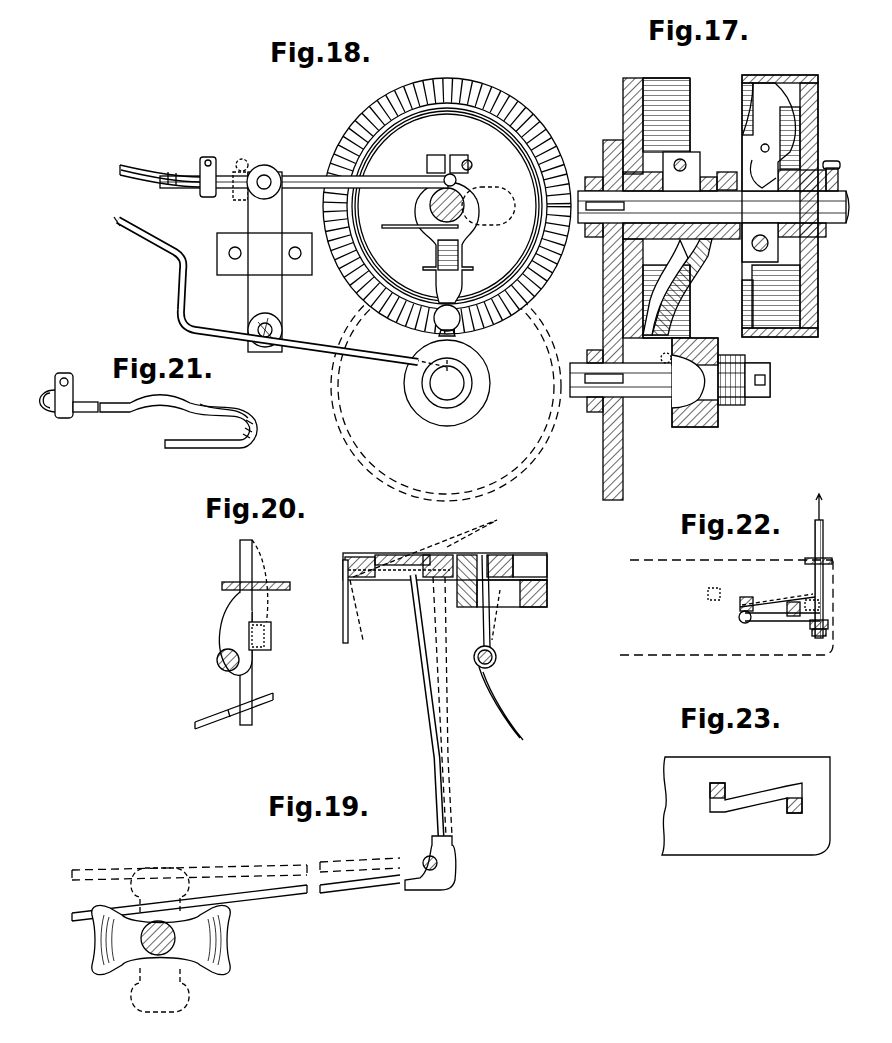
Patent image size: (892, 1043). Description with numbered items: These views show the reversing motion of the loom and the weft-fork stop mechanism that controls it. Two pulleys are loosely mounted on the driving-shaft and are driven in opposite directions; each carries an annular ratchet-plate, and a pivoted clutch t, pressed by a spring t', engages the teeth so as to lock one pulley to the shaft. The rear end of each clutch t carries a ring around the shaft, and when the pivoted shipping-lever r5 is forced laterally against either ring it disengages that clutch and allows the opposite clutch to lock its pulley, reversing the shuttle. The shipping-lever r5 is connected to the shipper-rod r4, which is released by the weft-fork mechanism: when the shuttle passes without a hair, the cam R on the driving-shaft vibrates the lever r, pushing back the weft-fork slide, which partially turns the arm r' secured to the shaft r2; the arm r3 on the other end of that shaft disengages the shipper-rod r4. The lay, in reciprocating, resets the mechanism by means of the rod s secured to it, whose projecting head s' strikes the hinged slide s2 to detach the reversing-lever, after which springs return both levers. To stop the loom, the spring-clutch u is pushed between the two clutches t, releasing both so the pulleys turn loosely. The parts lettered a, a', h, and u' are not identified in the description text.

In FIG. 17, the gear wheel a is at (656, 208).
In FIG. 18, the gear wheel a is at (447, 206).
In FIG. 17, the second gear wheel a' is at (780, 206).
In FIG. 17, the pivoted clutch t is at (719, 209).
In FIG. 17, the spring t' is at (680, 287).
In FIG. 17, the rod s is at (730, 156).
In FIG. 22, the rod s is at (819, 566).
In FIG. 22, the projecting head s' is at (833, 627).
In FIG. 22, the hinged slide s2 is at (762, 623).
In FIG. 18, the shipping-lever r5 is at (288, 176).
In FIG. 18, the spring-clutch u is at (465, 242).
In FIG. 21, the spring-clutch u is at (224, 398).
In FIG. 21, the spring blade u' is at (178, 418).
In FIG. 18, the hub h is at (423, 262).
In FIG. 20, the shipper-rod r4 is at (258, 548).
In FIG. 20, the arm r3 is at (226, 622).
In FIG. 19, the lever r is at (432, 732).
In FIG. 19, the arm r' is at (496, 601).
In FIG. 19, the shaft r2 is at (498, 657).
In FIG. 19, the cam R is at (161, 940).